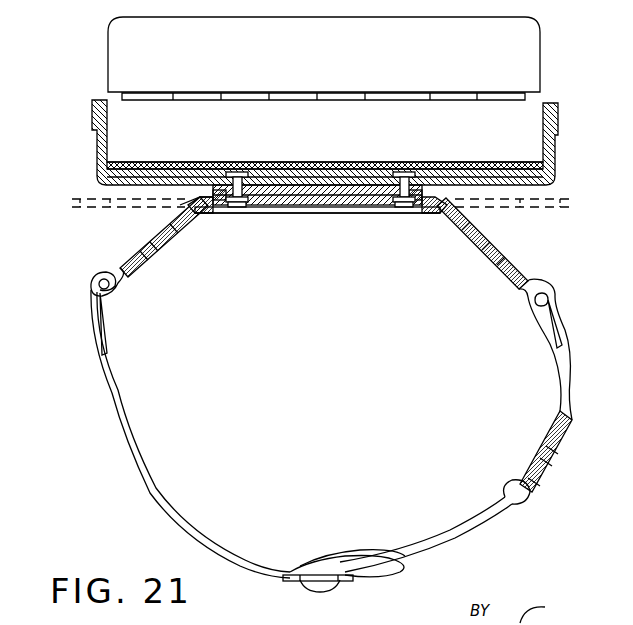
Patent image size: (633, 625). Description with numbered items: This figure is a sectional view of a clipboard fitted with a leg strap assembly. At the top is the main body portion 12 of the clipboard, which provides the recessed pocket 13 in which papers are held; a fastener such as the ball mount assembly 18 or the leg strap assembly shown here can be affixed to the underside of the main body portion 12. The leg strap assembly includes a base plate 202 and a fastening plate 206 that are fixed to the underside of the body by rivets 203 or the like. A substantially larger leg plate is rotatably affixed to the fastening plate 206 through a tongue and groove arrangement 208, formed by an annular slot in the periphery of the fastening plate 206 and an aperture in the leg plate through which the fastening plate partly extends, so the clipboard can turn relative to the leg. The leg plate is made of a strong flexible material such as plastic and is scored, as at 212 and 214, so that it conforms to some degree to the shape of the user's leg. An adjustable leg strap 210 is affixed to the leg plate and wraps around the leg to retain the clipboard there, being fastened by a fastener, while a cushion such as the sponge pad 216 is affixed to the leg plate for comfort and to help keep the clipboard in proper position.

The main body portion 12 is at (560, 168).
The recessed pocket 13 is at (560, 120).
The ball mount assembly 18 is at (287, 582).
The base plate 202 is at (438, 190).
The rivets 203 is at (240, 172).
The fastening plate 206 is at (348, 214).
The tongue and groove arrangement 208 is at (419, 214).
The adjustable leg strap 210 is at (130, 448).
The scoring 212 is at (200, 212).
The scoring 214 is at (450, 214).
The sponge pad 216 is at (161, 262).